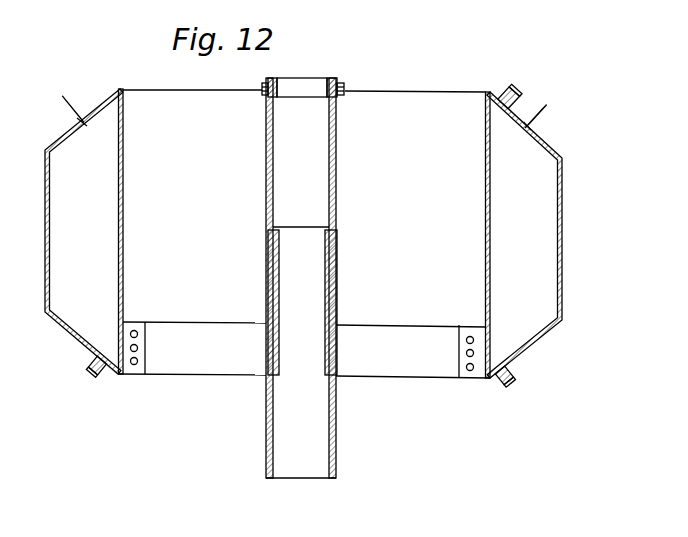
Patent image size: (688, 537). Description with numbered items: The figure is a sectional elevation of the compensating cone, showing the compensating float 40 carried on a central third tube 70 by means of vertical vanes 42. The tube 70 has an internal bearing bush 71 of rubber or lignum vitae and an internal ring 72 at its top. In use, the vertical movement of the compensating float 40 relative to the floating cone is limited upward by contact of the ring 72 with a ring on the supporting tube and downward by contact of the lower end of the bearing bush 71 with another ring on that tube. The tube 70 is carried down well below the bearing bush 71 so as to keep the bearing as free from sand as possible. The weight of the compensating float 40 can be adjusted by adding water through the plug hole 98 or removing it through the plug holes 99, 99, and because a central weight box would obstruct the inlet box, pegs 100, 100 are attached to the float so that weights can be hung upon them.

The compensating float 40 is at (45, 297).
The vertical vanes 42 is at (189, 371).
The third tube 70 is at (264, 432).
The internal bearing bush 71 is at (279, 331).
The internal ring 72 is at (281, 83).
The plug hole 98 is at (512, 83).
The plug holes 99 is at (90, 374).
The pegs 100 is at (67, 109).